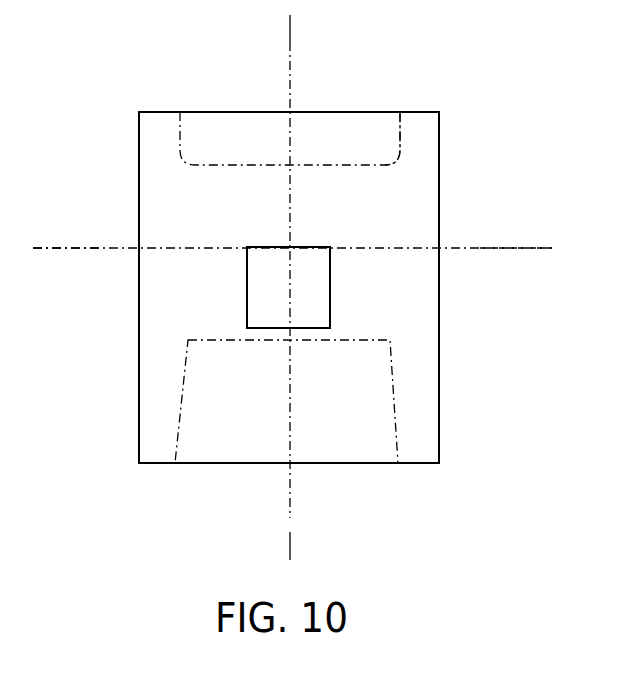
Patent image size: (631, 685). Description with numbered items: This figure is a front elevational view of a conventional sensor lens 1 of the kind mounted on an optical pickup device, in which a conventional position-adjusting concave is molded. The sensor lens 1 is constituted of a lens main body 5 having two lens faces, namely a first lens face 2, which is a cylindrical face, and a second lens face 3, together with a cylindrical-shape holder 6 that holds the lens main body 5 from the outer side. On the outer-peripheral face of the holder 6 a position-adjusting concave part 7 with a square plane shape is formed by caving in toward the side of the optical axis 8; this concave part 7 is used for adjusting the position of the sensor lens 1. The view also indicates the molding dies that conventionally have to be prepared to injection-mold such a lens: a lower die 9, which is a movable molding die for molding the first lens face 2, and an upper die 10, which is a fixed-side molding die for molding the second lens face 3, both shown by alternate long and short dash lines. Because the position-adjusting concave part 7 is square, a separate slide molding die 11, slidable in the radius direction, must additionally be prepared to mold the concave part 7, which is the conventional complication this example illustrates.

The sensor lens 1 is at (122, 108).
The first lens face 2 is at (355, 158).
The second lens face 3 is at (343, 340).
The lens main body 5 is at (392, 155).
The holder 6 is at (139, 189).
The position-adjusting concave part 7 is at (330, 285).
The optical axis 8 is at (287, 101).
The lower die 9 is at (62, 248).
The upper die 10 is at (62, 248).
The slide molding die 11 is at (288, 29).